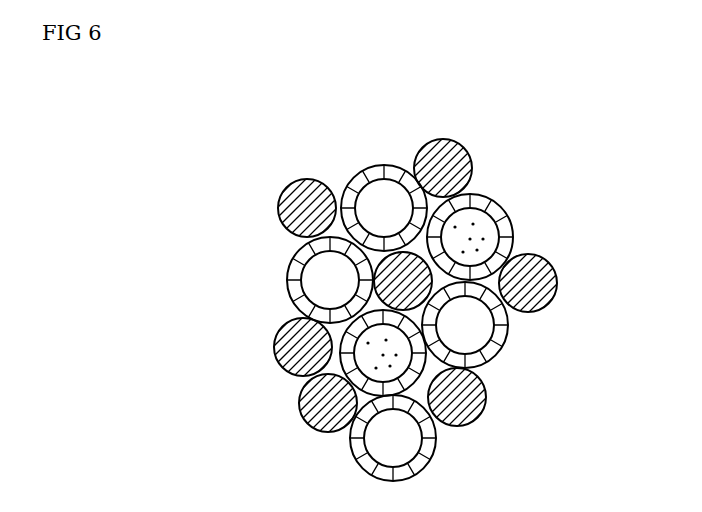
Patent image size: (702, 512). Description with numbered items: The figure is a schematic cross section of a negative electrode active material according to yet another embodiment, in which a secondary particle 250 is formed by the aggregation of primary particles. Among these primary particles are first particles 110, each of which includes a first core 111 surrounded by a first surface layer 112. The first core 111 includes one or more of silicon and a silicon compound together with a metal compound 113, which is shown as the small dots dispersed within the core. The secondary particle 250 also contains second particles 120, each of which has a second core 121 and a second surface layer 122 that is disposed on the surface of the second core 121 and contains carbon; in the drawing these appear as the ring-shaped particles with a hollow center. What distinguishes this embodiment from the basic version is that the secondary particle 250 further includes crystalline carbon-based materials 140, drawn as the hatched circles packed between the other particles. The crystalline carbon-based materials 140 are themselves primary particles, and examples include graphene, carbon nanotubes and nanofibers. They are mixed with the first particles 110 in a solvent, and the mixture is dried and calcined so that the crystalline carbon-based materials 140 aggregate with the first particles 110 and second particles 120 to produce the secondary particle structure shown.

The first particle 110 is at (204, 354).
The first core 111 is at (350, 382).
The first surface layer 112 is at (352, 362).
The metal compound 113 is at (368, 343).
The second particle 120 is at (383, 89).
The second core 121 is at (352, 176).
The second surface layer 122 is at (369, 207).
The crystalline carbon-based material 140 is at (468, 165).
The secondary particle 250 is at (529, 225).